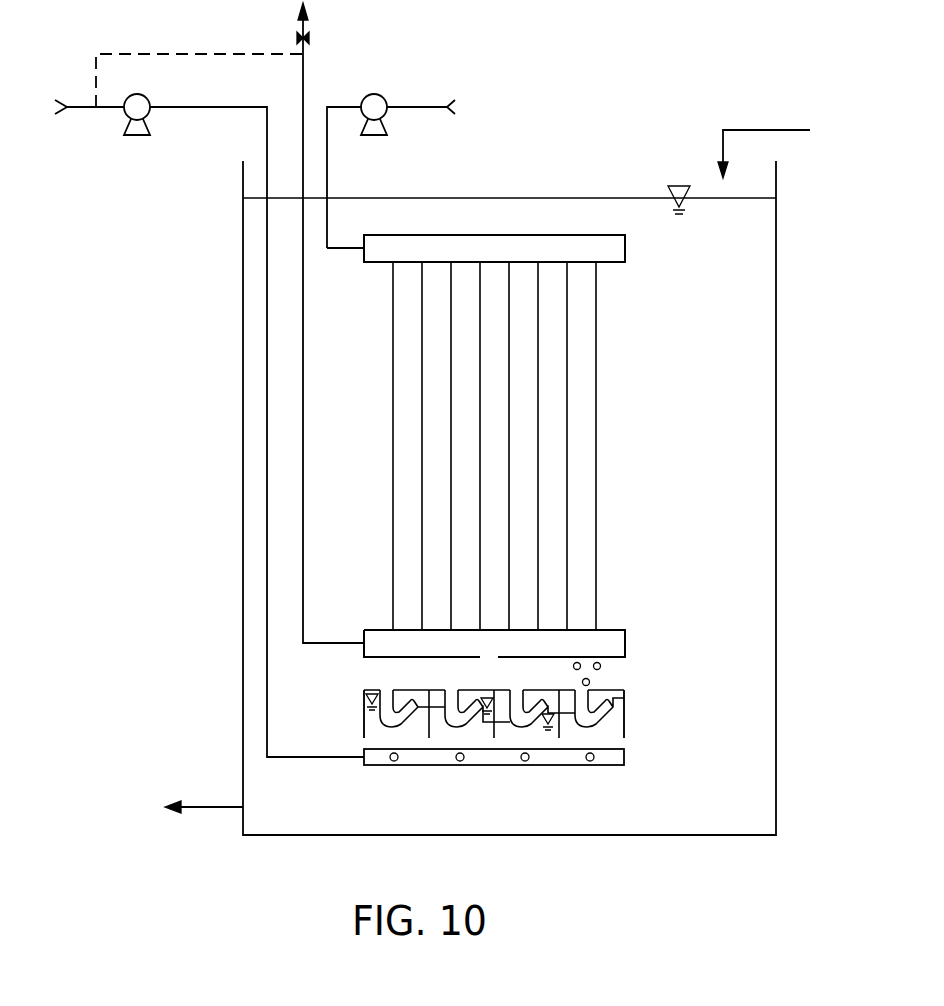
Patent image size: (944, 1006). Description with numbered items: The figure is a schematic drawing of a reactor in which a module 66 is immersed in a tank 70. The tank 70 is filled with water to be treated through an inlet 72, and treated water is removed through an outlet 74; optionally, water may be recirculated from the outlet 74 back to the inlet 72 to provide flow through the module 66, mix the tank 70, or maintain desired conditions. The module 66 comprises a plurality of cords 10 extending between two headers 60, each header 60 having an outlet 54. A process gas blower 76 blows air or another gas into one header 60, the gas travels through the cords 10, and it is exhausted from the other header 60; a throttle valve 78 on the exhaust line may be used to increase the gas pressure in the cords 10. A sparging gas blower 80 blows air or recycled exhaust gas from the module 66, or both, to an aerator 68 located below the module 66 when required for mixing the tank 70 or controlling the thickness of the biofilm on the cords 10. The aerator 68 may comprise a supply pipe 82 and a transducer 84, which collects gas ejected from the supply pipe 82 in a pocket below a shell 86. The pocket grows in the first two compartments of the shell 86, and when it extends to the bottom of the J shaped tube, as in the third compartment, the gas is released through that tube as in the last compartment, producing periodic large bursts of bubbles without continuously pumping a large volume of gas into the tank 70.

The cord 10 is at (597, 498).
The outlet 54 is at (349, 249).
The header 60 is at (625, 248).
The module 66 is at (552, 446).
The aerator 68 is at (521, 711).
The tank 70 is at (776, 641).
The inlet 72 is at (765, 130).
The outlet 74 is at (207, 806).
The process gas blower 76 is at (373, 94).
The throttle valve 78 is at (311, 40).
The sparging gas blower 80 is at (128, 120).
The supply pipe 82 is at (602, 765).
The transducer 84 is at (363, 719).
The shell 86 is at (624, 718).